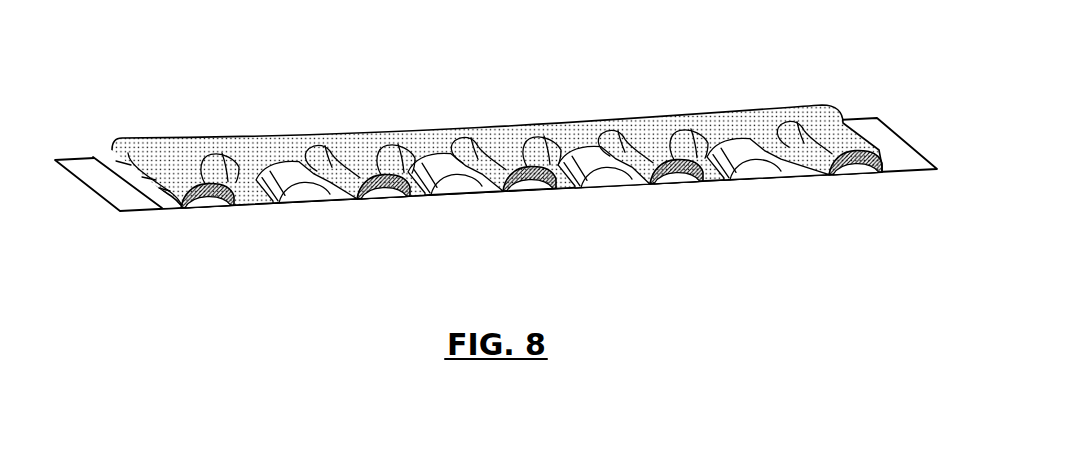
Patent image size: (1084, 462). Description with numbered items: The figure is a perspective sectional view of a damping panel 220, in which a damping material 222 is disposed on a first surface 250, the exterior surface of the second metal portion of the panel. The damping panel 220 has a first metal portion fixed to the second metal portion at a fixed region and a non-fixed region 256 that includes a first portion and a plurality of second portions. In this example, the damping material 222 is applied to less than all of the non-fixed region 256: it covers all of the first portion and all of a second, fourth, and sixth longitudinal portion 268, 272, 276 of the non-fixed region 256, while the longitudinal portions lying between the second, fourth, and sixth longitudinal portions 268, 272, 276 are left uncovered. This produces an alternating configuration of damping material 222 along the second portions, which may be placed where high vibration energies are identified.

The damping panel 220 is at (508, 168).
The damping material 222 is at (487, 168).
The first surface 250 is at (892, 167).
The non-fixed region 256 is at (271, 200).
The second longitudinal portion 268 is at (357, 157).
The fourth longitudinal portion 272 is at (519, 150).
The sixth longitudinal portion 276 is at (648, 125).